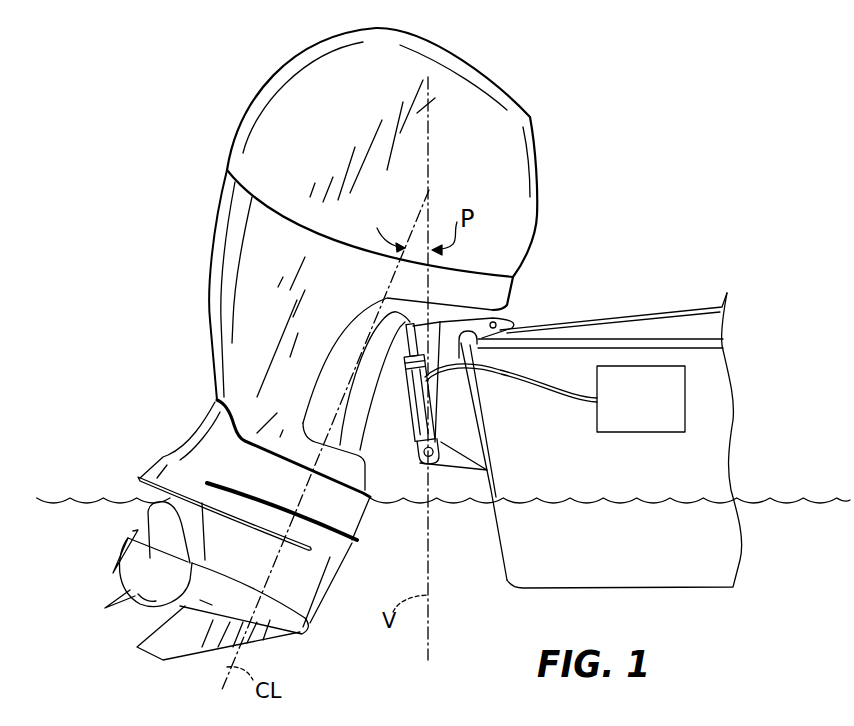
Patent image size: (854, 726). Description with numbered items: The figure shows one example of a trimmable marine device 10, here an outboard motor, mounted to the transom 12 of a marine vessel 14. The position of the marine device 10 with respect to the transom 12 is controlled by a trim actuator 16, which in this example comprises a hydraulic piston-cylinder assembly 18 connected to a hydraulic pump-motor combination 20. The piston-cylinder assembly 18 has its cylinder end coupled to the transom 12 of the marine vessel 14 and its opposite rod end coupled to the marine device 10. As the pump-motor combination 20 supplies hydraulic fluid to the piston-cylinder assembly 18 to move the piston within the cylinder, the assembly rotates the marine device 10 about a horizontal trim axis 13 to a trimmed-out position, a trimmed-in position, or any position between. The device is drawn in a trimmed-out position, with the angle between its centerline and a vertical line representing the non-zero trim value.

The trimmable marine device 10 is at (483, 75).
The transom 12 is at (500, 557).
The horizontal trim axis 13 is at (497, 322).
The marine vessel 14 is at (707, 407).
The trim actuator 16 is at (453, 417).
The hydraulic piston-cylinder assembly 18 is at (403, 407).
The hydraulic pump-motor combination 20 is at (654, 406).